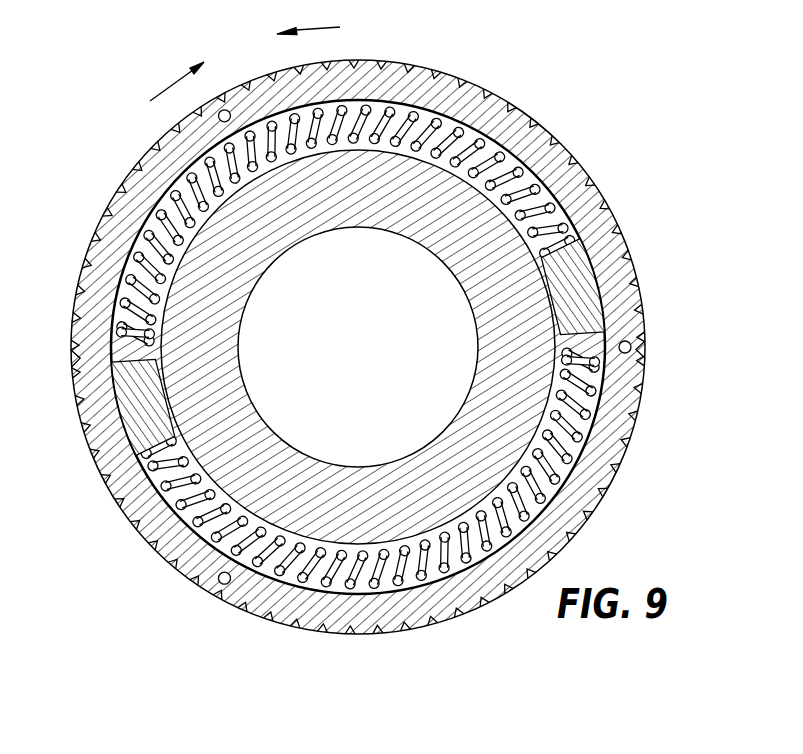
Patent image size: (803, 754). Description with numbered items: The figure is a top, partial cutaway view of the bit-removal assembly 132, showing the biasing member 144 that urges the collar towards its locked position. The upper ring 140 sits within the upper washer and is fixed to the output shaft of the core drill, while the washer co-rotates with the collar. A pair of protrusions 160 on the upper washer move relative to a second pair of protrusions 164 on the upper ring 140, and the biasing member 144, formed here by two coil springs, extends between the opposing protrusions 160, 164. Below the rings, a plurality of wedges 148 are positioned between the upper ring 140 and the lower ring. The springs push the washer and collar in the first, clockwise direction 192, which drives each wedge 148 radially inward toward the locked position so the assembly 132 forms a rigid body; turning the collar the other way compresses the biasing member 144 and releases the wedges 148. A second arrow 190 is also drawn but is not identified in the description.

The bit-removal assembly 132 is at (575, 137).
The upper ring 140 is at (503, 402).
The biasing member 144 is at (446, 131).
The wedges 148 is at (720, 12).
The protrusions 160 is at (581, 297).
The second pair of protrusions 164 is at (77, 348).
The first rotation direction 190 is at (309, 26).
The first direction 192 is at (175, 80).